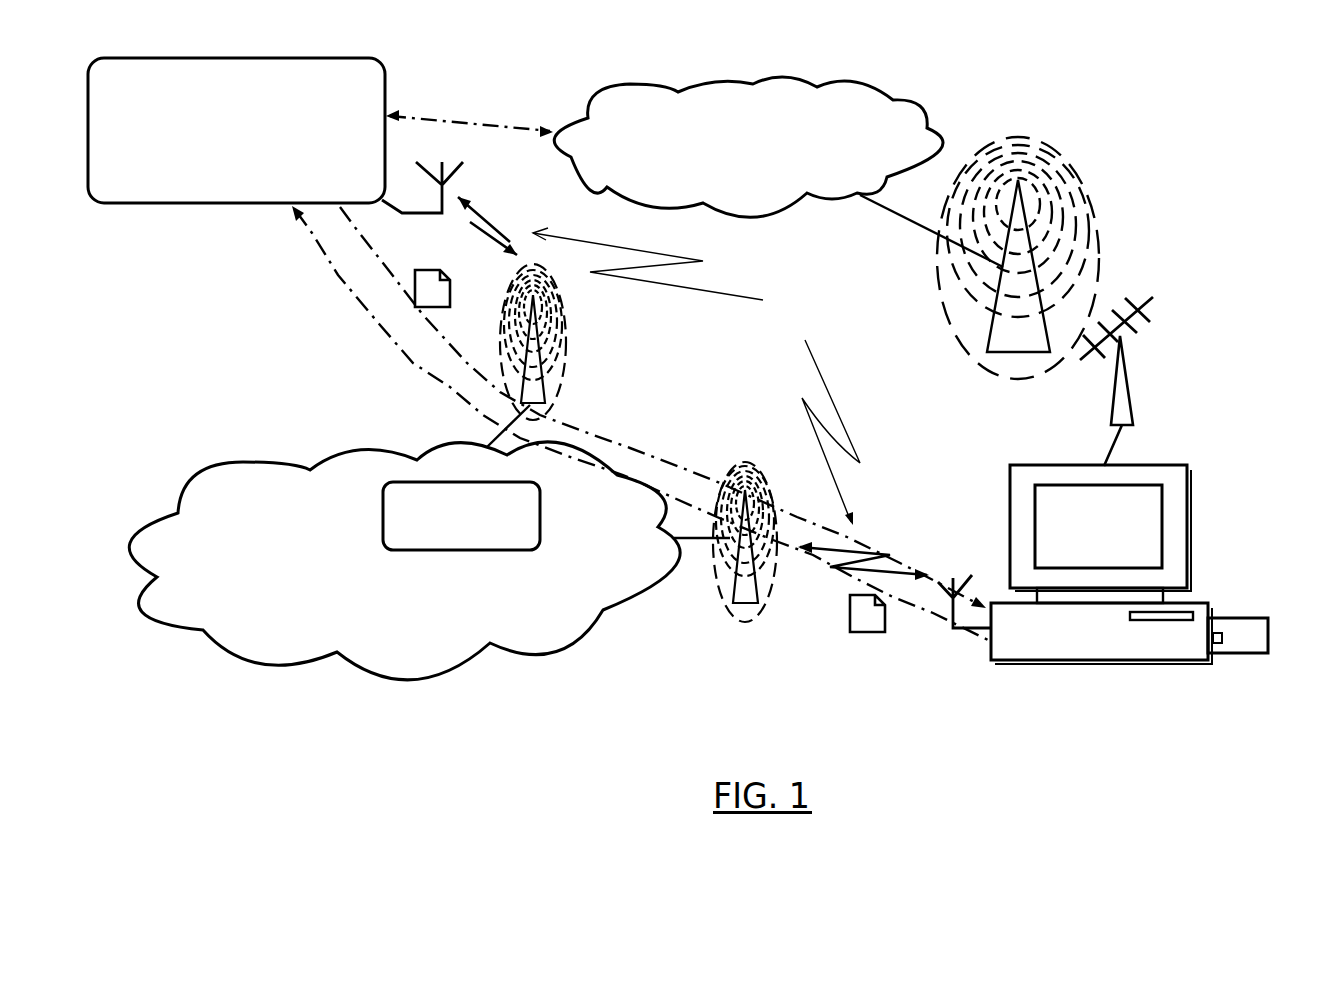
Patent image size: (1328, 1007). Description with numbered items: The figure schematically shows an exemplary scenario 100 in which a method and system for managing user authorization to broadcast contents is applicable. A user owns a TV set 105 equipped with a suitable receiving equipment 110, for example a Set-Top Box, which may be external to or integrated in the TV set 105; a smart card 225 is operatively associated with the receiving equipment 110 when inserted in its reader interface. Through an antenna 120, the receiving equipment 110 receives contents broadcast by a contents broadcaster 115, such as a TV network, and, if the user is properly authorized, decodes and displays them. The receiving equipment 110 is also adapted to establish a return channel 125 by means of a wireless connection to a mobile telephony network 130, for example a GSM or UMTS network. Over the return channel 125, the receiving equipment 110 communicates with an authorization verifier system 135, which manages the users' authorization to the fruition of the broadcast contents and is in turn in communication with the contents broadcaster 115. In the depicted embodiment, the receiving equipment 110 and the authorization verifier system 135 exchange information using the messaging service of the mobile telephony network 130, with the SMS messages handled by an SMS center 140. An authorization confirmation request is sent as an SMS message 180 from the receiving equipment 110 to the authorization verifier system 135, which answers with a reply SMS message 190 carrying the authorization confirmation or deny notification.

The exemplary scenario 100 is at (1230, 83).
The TV set 105 is at (1187, 537).
The receiving equipment 110 is at (1013, 662).
The contents broadcaster 115 is at (773, 119).
The antenna 120 is at (1122, 356).
The return channel 125 is at (696, 376).
The mobile telephony network 130 is at (233, 601).
The authorization verifier system 135 is at (250, 178).
The SMS center 140 is at (383, 512).
The SMS message 180 is at (862, 632).
The reply SMS message 190 is at (444, 280).
The smart card 225 is at (1243, 654).